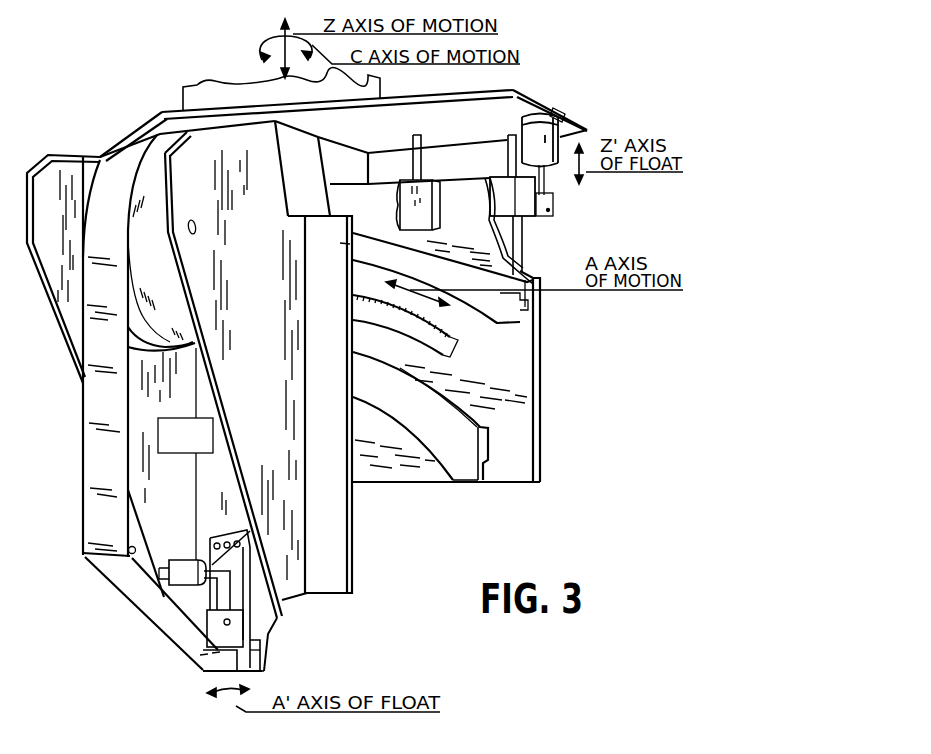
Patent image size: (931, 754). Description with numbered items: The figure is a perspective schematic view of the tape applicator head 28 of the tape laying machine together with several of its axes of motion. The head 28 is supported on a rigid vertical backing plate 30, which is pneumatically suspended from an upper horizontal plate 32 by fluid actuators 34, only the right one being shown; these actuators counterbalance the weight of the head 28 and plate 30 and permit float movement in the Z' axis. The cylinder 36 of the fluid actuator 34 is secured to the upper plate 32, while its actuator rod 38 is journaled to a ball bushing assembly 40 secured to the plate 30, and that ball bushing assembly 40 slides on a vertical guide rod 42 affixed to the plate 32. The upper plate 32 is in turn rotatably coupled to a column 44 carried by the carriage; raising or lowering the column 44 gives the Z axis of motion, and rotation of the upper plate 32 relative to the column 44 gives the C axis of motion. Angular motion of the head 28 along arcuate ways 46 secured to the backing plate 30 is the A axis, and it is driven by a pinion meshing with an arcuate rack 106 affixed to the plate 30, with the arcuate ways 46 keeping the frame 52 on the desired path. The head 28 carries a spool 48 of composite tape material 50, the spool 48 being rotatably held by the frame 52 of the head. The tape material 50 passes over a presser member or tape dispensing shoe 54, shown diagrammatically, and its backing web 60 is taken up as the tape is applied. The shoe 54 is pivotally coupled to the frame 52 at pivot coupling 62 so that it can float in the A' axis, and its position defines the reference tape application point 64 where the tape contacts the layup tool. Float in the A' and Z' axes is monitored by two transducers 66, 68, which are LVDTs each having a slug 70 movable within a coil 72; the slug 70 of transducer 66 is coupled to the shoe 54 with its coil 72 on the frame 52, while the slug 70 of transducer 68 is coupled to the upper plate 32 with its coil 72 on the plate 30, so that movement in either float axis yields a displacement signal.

The tape applicator head 28 is at (514, 505).
The backing plate 30 is at (546, 430).
The upper plate 32 is at (188, 124).
The fluid actuator 34 is at (556, 116).
The cylinder 36 is at (540, 125).
The actuator rod 38 is at (548, 178).
The ball bushing assembly 40 is at (546, 228).
The vertical guide rod 42 is at (522, 251).
The column 44 is at (240, 93).
The arcuate ways 46 is at (507, 300).
The spool 48 is at (153, 271).
The composite tape material 50 is at (100, 488).
The frame 52 is at (44, 290).
The tape dispensing shoe 54 is at (258, 673).
The backing web 60 is at (282, 634).
The pivot coupling 62 is at (224, 623).
The tape application point 64 is at (230, 677).
The transducer (LVDT) 66 is at (186, 556).
The transducer (LVDT) 68 is at (446, 209).
The slug 70 is at (420, 160).
The coil 72 is at (433, 197).
The arcuate rack 106 is at (458, 336).